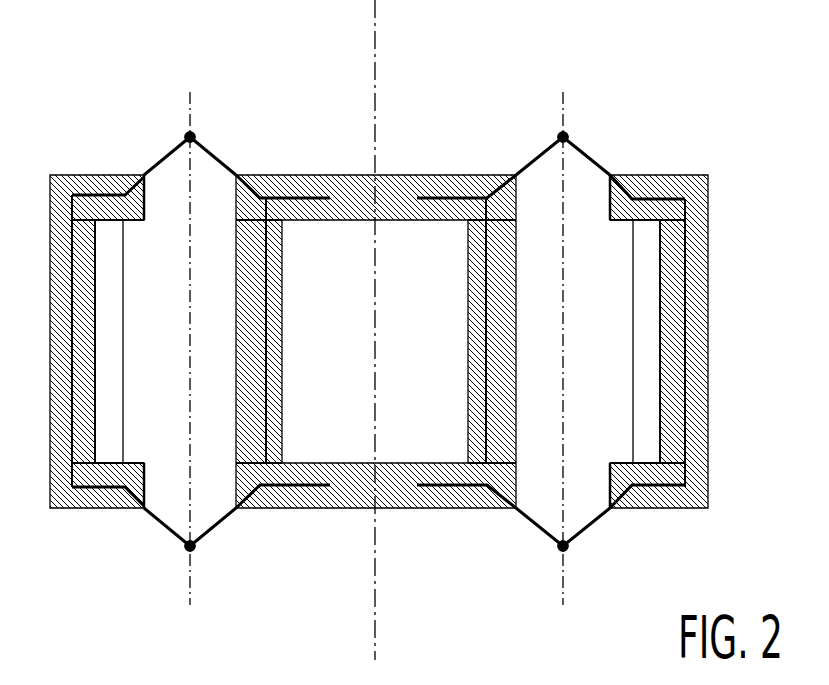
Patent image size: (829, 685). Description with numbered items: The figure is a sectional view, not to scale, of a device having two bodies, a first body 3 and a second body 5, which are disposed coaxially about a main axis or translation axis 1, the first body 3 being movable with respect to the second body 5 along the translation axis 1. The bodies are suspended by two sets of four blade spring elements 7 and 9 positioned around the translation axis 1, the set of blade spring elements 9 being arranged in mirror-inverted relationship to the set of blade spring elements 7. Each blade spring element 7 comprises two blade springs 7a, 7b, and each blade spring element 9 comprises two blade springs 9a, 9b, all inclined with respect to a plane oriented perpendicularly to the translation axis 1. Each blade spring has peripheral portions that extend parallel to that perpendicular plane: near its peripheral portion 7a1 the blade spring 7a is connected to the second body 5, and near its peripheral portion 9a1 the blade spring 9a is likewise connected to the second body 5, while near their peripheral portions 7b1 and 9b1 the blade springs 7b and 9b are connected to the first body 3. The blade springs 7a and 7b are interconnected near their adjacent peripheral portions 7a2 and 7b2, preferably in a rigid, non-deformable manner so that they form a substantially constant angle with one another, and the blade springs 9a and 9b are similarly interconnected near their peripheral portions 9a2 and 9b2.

The translation axis 1 is at (375, 40).
The first body 3 is at (503, 358).
The second body 5 is at (695, 368).
The blade spring element 7 is at (375, 122).
The blade spring 7a is at (600, 165).
The blade spring 7b is at (525, 158).
The peripheral portion 7a1 is at (673, 173).
The peripheral portion 7b1 is at (450, 175).
The peripheral portion 7a2 is at (563, 137).
The peripheral portion 7b2 is at (563, 137).
The blade spring element 9 is at (374, 566).
The blade spring 9a is at (600, 525).
The blade spring 9b is at (525, 525).
The peripheral portion 9a1 is at (673, 510).
The peripheral portion 9b1 is at (450, 510).
The peripheral portion 9a2 is at (563, 546).
The peripheral portion 9b2 is at (563, 546).